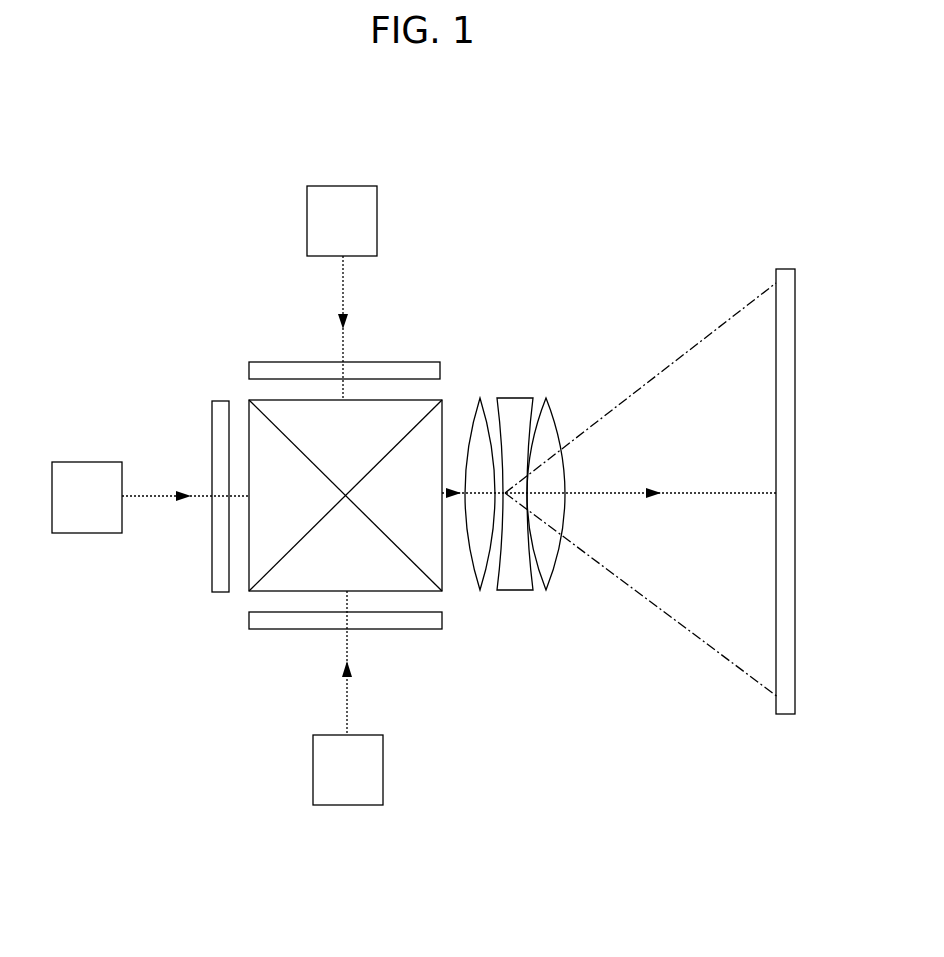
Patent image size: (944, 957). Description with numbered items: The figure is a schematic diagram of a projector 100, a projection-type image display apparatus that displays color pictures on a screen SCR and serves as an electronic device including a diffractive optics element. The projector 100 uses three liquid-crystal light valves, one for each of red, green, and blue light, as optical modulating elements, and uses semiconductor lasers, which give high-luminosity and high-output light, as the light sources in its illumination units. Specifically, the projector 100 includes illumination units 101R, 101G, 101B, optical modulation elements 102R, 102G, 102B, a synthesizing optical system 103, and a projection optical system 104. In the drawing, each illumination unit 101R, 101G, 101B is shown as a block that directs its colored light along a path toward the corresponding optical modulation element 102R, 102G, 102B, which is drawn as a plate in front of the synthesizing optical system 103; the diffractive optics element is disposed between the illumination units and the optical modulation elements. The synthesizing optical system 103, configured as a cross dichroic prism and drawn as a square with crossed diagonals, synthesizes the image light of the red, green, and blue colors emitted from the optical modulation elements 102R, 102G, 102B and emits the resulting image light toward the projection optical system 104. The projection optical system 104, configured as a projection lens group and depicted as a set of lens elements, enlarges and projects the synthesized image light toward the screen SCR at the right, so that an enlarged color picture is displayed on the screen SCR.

The projector 100 is at (131, 231).
The illumination unit 101R is at (311, 225).
The illumination unit 101G is at (91, 473).
The illumination unit 101B is at (322, 775).
The optical modulation element 102R is at (253, 371).
The optical modulation element 102G is at (222, 580).
The optical modulation element 102B is at (264, 620).
The synthesizing optical system 103 is at (428, 553).
The projection optical system 104 is at (557, 396).
The screen SCR is at (785, 271).